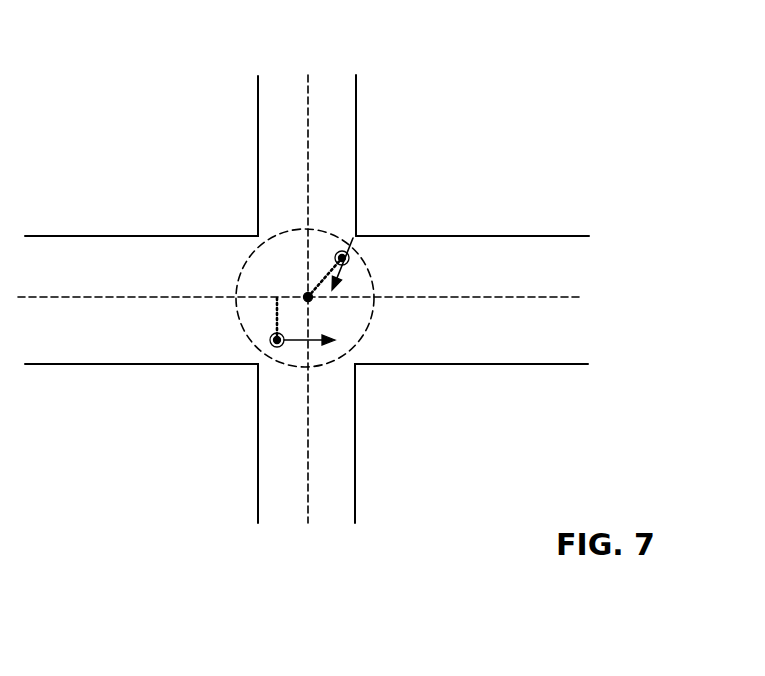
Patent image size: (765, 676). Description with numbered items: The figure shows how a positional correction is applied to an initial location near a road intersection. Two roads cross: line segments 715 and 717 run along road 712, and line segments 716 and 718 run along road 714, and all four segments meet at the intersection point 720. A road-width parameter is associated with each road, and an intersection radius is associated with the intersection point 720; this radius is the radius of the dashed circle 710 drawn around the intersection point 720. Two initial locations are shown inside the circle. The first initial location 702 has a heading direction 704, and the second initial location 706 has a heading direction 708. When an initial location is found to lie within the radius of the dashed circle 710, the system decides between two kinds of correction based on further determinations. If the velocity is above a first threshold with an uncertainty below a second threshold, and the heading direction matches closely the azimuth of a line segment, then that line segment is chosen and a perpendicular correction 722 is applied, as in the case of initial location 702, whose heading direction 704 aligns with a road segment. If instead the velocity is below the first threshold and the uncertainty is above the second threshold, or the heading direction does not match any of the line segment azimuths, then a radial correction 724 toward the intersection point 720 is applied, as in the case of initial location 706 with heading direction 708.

The initial location 702 is at (272, 340).
The heading direction 704 is at (302, 339).
The initial location 706 is at (358, 236).
The heading direction 708 is at (340, 280).
The dashed circle 710 is at (368, 332).
The road 712 is at (357, 108).
The road 714 is at (505, 236).
The line segment 715 is at (308, 163).
The line segment 716 is at (470, 297).
The line segment 717 is at (308, 449).
The line segment 718 is at (80, 297).
The intersection point 720 is at (306, 296).
The perpendicular correction 722 is at (274, 322).
The radial correction 724 is at (345, 276).